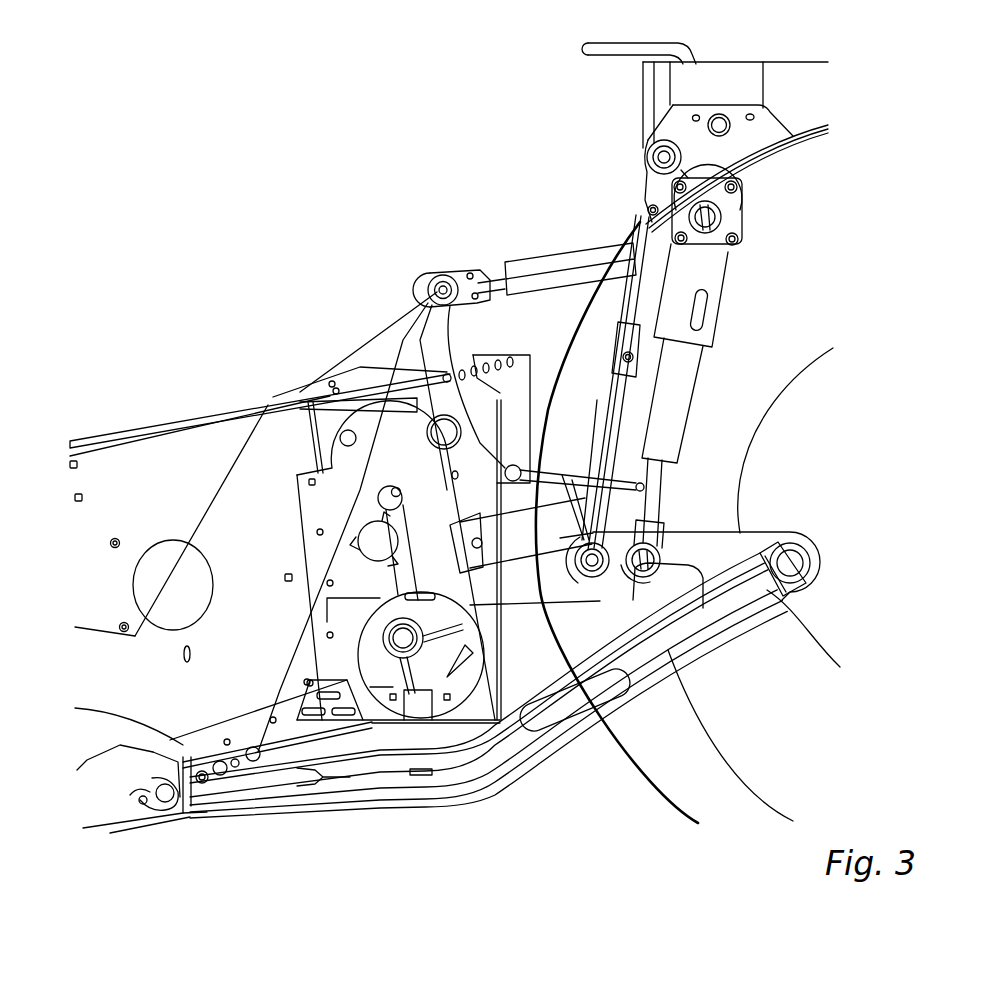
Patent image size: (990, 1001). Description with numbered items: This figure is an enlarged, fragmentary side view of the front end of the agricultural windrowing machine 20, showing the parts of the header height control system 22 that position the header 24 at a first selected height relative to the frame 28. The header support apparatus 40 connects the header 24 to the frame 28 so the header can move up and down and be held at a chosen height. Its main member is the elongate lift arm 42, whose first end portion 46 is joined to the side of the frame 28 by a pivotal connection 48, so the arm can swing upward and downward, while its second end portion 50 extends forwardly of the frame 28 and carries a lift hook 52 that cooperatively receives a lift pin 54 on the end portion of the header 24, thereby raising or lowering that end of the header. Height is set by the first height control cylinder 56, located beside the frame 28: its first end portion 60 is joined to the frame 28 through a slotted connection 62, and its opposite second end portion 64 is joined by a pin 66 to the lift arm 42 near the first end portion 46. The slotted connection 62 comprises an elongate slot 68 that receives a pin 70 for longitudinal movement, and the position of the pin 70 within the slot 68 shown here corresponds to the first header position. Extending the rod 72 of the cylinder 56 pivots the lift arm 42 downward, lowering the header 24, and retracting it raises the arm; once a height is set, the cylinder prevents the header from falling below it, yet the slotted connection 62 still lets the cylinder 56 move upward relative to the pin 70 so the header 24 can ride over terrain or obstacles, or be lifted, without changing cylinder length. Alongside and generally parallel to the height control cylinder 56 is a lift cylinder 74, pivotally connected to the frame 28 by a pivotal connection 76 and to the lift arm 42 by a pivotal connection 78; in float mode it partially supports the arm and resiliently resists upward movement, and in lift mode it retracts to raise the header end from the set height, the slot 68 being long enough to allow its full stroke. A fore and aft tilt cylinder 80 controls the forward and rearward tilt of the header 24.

The agricultural windrowing machine 20 is at (450, 100).
The header height control system 22 is at (868, 429).
The header 24 is at (148, 428).
The frame 28 is at (642, 83).
The header support apparatus 40 is at (704, 366).
The lift arm 42 is at (662, 685).
The first end portion 46 is at (802, 597).
The pivotal connection 48 is at (815, 562).
The second end portion 50 is at (207, 812).
The lift hook 52 is at (130, 795).
The lift pin 54 is at (160, 788).
The first height control cylinder 56 is at (697, 398).
The first end portion 60 is at (735, 205).
The slotted connection 62 is at (727, 258).
The second end portion 64 is at (665, 500).
The pin 66 is at (661, 554).
The elongate slot 68 is at (705, 296).
The pin 70 is at (655, 195).
The rod 72 is at (670, 477).
The lift cylinder 74 is at (615, 320).
The pivotal connection 76 is at (658, 148).
The pivotal connection 78 is at (580, 570).
The fore and aft tilt cylinder 80 is at (545, 262).